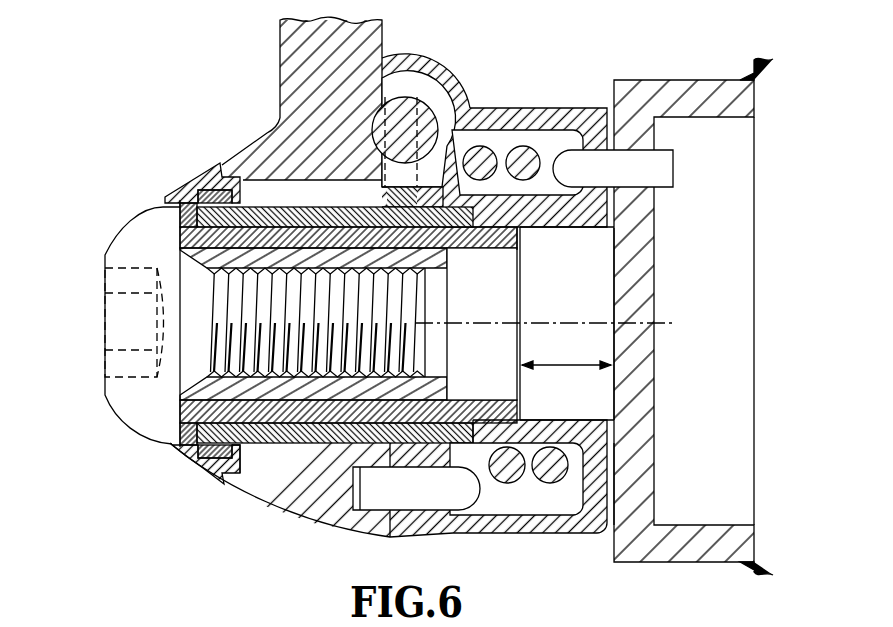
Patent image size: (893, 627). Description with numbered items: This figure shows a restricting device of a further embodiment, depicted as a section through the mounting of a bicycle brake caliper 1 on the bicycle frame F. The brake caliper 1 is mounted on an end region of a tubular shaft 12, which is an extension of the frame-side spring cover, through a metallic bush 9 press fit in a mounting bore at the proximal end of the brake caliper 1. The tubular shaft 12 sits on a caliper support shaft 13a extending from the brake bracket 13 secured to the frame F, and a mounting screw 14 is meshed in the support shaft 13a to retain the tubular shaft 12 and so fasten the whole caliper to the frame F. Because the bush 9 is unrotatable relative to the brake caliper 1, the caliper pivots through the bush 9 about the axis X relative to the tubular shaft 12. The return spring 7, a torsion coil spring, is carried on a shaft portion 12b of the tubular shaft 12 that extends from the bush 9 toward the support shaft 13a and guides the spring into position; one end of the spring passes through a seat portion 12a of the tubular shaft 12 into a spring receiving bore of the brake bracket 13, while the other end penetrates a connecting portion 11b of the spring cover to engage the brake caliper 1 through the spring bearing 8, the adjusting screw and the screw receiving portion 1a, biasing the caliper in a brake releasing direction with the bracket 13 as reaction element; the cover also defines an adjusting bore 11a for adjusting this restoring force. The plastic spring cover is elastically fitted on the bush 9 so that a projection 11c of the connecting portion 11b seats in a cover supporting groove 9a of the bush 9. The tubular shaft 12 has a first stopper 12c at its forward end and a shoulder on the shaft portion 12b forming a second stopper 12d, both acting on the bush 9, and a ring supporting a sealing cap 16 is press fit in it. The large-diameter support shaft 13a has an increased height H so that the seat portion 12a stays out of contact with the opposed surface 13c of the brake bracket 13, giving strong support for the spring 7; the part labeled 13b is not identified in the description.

The brake caliper 1 is at (280, 72).
The screw receiving portion 1a is at (438, 80).
The return spring 7 is at (505, 448).
The spring bearing 8 is at (350, 460).
The bush 9 is at (292, 207).
The cover supporting groove 9a is at (375, 207).
The adjusting bore 11a is at (510, 110).
The connecting portion 11b is at (446, 210).
The projection 11c is at (447, 437).
The tubular shaft 12 is at (253, 207).
The seat portion 12a is at (620, 203).
The shaft portion 12b is at (560, 224).
The first stopper 12c is at (178, 197).
The second stopper 12d is at (520, 229).
The brake bracket 13 is at (665, 90).
The caliper support shaft 13a is at (603, 303).
The plate hook 13b is at (237, 446).
The opposed surface 13c is at (614, 470).
The mounting screw 14 is at (131, 230).
The sealing cap 16 is at (183, 200).
The axis X is at (556, 327).
The height H is at (566, 349).
The bicycle frame F is at (755, 383).